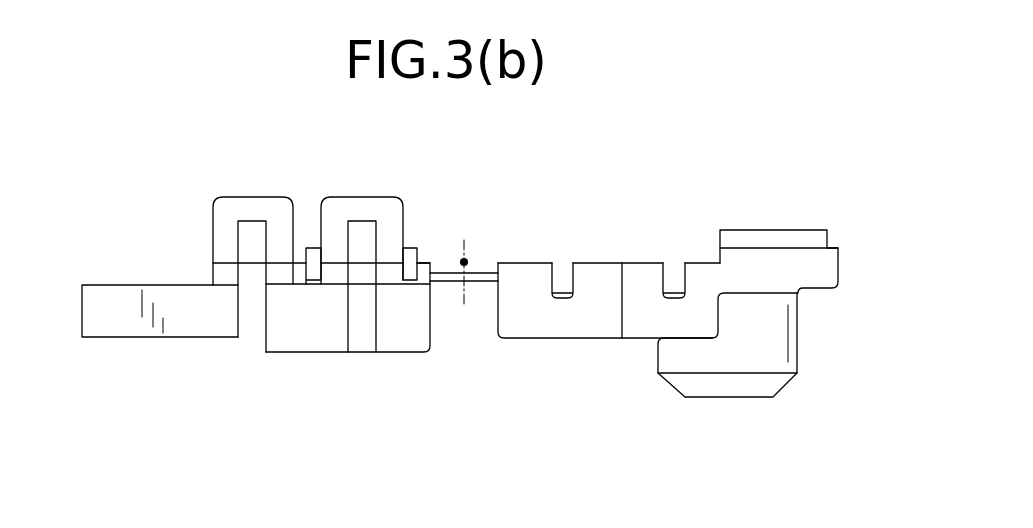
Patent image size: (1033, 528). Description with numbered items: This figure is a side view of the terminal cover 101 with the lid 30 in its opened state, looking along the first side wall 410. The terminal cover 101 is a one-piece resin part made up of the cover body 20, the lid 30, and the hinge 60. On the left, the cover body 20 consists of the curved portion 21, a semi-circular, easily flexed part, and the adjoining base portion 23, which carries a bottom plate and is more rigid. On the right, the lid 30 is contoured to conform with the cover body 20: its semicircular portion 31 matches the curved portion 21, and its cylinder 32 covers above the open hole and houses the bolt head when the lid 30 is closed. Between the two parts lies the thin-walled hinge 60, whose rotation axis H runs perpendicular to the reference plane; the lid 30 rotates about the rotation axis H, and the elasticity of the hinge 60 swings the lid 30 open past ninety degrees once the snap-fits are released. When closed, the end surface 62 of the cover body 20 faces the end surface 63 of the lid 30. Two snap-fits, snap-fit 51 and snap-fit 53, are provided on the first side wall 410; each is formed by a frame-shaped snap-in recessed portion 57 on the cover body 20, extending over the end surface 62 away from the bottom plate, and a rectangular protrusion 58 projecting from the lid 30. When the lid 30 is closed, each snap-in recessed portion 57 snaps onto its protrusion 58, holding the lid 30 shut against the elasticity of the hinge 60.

The terminal cover 101 is at (632, 272).
The cover body 20 is at (160, 351).
The curved portion 21 is at (117, 313).
The base portion 23 is at (328, 352).
The lid 30 is at (545, 306).
The semicircular portion 31 is at (817, 265).
The cylinder 32 is at (770, 343).
The first side wall 410 is at (398, 340).
The snap-fit 51 is at (207, 207).
The snap-fit 53 is at (410, 203).
The snap-in recessed portion 57 is at (252, 208).
The protrusion 58 is at (563, 282).
The hinge 60 is at (448, 282).
The end surface 62 is at (299, 252).
The end surface 63 is at (603, 262).
The rotation axis H is at (468, 262).